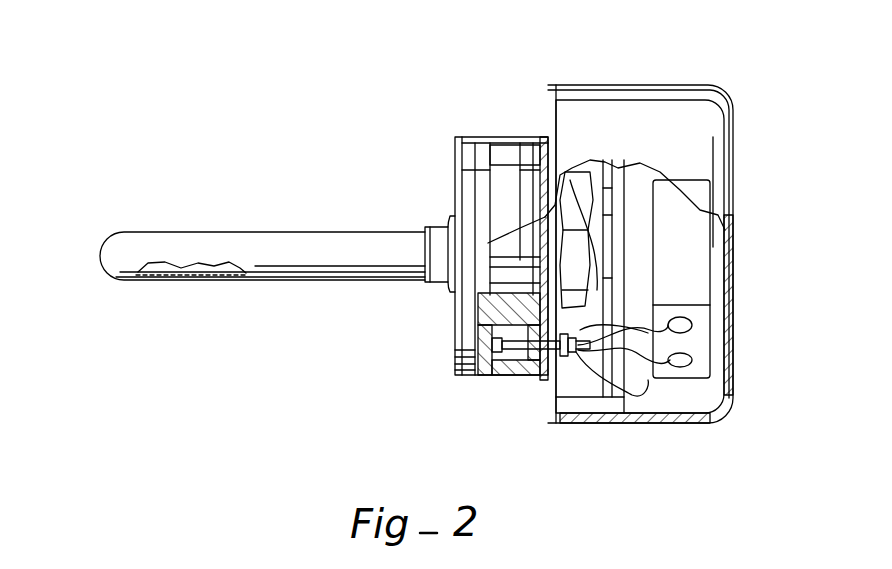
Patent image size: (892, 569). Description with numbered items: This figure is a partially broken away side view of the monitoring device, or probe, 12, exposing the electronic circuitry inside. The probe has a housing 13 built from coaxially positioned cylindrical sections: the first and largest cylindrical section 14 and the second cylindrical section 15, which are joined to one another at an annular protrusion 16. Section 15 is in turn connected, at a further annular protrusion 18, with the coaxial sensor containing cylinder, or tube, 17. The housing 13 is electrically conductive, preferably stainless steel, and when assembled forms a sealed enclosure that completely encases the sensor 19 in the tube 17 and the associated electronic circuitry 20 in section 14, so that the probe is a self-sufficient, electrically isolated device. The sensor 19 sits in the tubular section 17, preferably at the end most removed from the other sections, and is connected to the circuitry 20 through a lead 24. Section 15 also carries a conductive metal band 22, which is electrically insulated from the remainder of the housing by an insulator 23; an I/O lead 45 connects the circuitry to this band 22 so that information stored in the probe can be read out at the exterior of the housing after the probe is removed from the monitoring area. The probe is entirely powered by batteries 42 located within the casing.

The monitoring device 12 is at (341, 356).
The housing 13 is at (623, 85).
The first cylindrical section 14 is at (710, 86).
The second cylindrical section 15 is at (500, 137).
The annular protrusion 16 is at (542, 132).
The sensor containing cylinder 17 is at (258, 232).
The annular protrusion 18 is at (447, 224).
The sensor 19 is at (182, 278).
The electronic circuitry 20 is at (611, 203).
The band 22 is at (500, 165).
The insulator 23 is at (482, 378).
The lead 24 is at (582, 195).
The batteries 42 is at (700, 345).
The I/O lead 45 is at (560, 380).